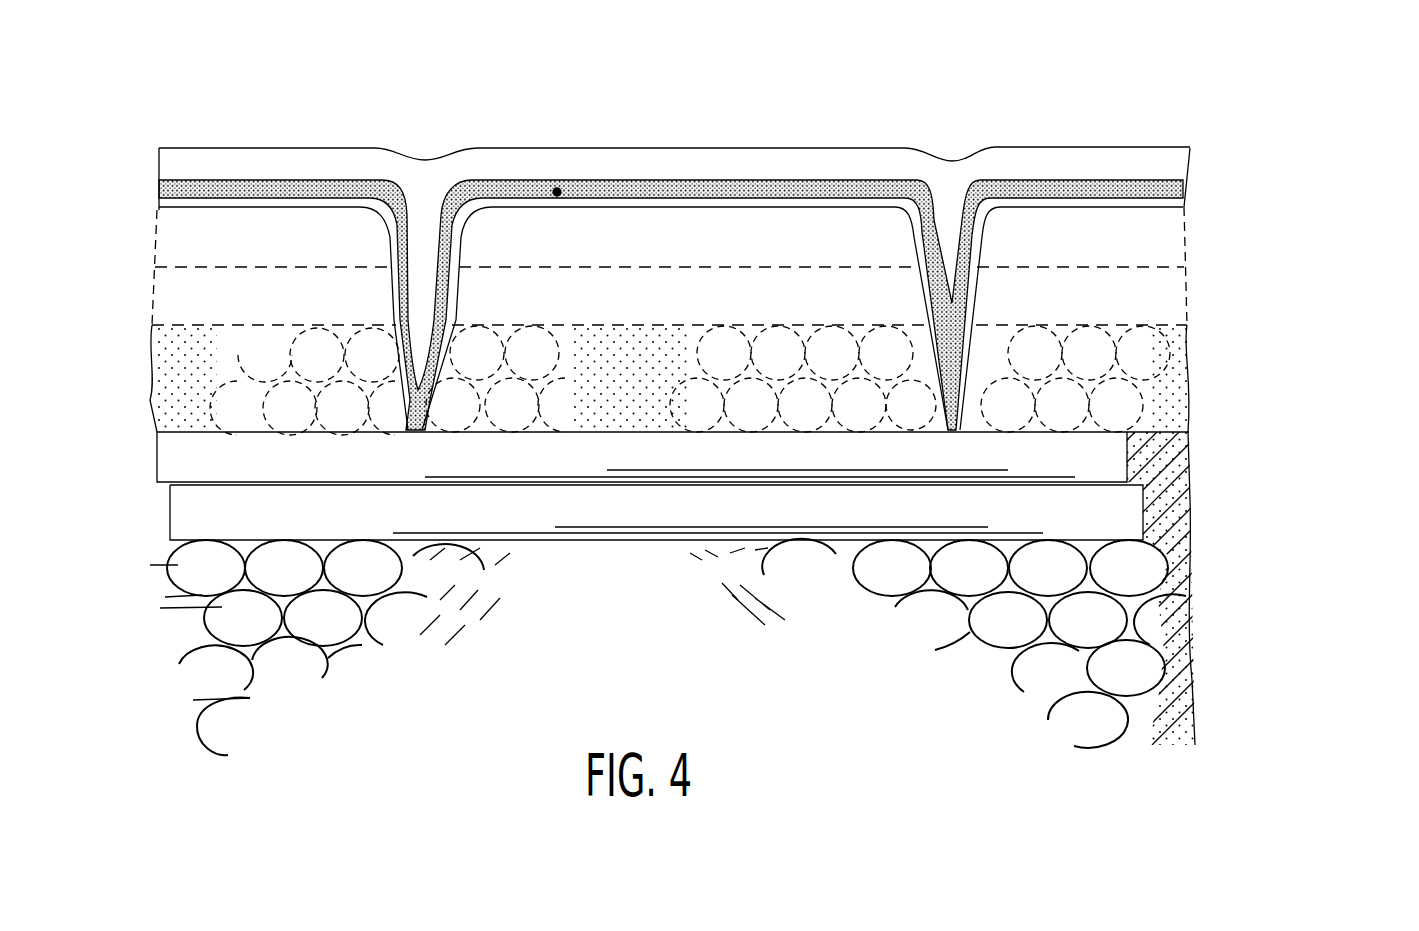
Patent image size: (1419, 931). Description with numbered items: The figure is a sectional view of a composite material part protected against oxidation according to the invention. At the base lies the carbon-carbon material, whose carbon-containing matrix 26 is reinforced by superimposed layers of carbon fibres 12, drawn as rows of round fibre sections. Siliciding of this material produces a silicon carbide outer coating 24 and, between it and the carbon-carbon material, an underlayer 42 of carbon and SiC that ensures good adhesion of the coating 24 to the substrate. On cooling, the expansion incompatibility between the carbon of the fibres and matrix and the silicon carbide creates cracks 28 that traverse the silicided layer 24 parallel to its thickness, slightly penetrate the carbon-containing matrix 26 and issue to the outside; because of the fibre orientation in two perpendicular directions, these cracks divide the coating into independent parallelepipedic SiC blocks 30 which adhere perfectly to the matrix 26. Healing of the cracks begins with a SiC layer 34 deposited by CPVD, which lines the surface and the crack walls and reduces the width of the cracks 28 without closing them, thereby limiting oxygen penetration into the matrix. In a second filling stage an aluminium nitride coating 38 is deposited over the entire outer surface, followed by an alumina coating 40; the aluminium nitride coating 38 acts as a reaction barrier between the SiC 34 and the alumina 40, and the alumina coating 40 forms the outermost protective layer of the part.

The carbon fibres 12 is at (150, 268).
The outer coating 24 is at (1190, 375).
The carbon-containing matrix 26 is at (1150, 720).
The cracks 28 is at (392, 240).
The SiC blocks 30 is at (557, 195).
The SiC layer 34 is at (1183, 205).
The aluminium nitride coating 38 is at (903, 183).
The alumina coating 40 is at (645, 160).
The underlayer of carbon and SiC 42 is at (1165, 462).